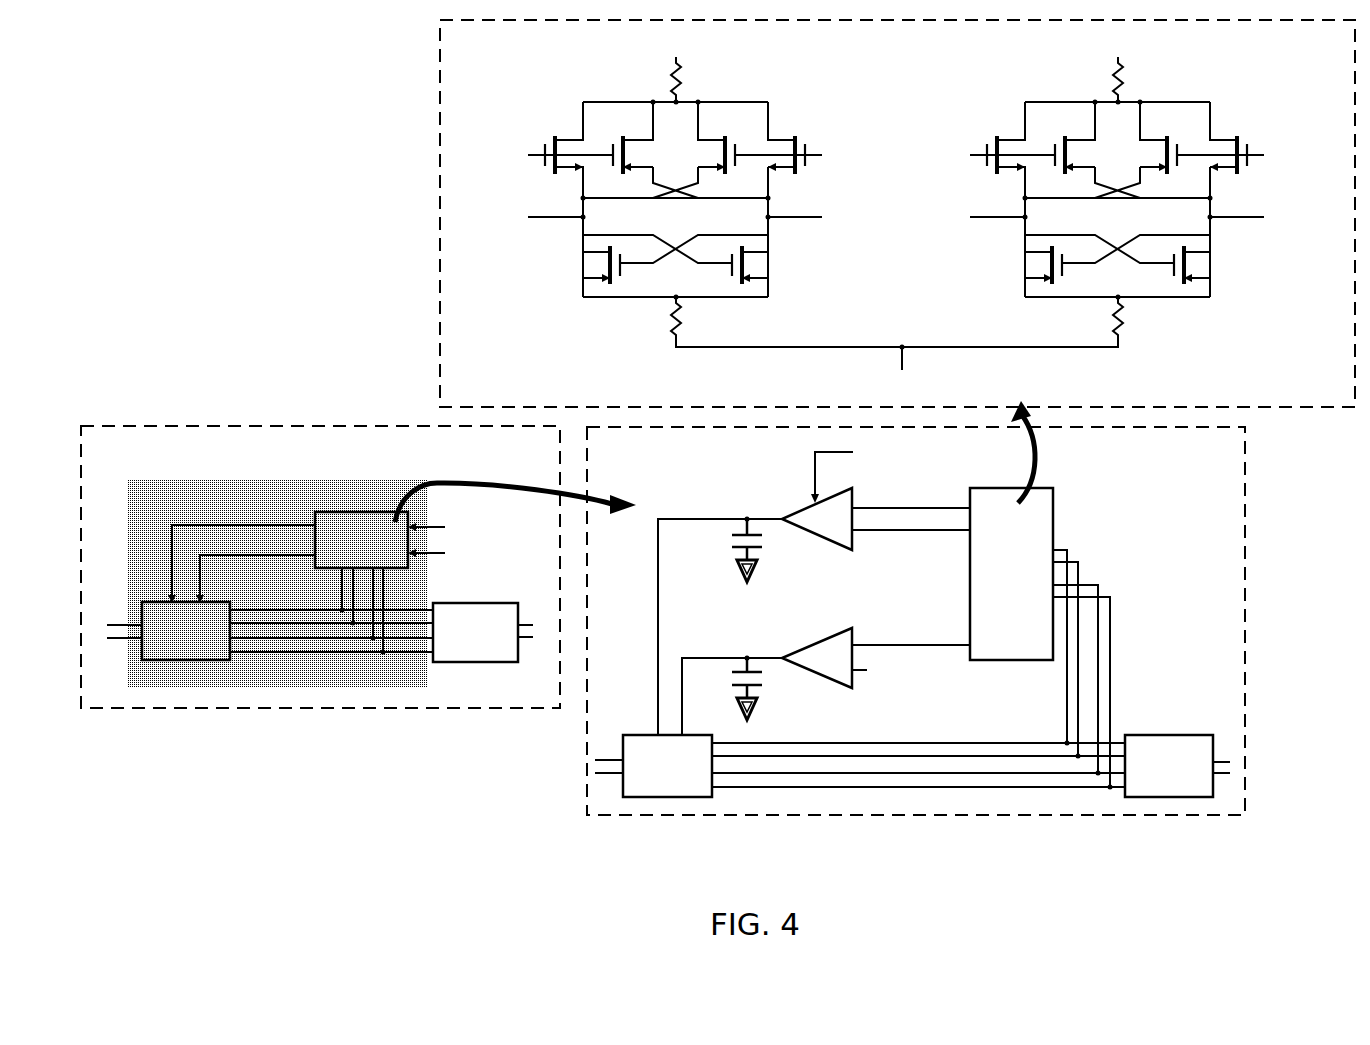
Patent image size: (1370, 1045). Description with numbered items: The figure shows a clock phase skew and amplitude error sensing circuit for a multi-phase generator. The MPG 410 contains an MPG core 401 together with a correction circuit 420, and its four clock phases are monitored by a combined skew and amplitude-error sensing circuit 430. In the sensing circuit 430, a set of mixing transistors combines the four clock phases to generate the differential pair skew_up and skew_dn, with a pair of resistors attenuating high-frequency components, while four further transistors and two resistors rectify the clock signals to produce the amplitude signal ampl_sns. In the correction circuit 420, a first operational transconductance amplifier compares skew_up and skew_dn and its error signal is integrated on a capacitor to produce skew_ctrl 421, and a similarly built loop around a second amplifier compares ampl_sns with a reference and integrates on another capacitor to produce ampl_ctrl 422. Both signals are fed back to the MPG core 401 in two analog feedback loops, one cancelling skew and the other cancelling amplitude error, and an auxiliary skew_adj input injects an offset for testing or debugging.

The MPG core 401 is at (178, 662).
The MPG 410 is at (320, 567).
The correction circuit 420 is at (376, 510).
The skew_ctrl 421 is at (672, 523).
The ampl_ctrl 422 is at (692, 662).
The combined skew and amplitude-error sensing circuit 430 is at (1108, 480).